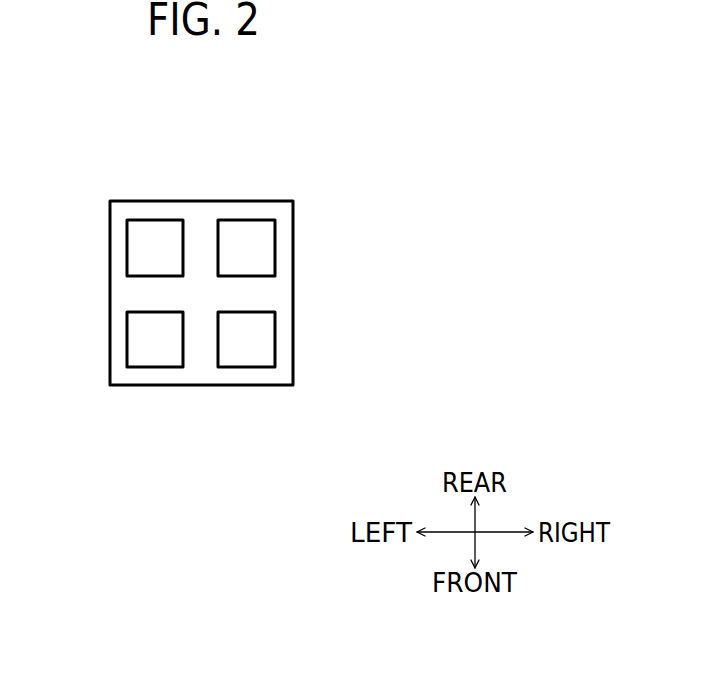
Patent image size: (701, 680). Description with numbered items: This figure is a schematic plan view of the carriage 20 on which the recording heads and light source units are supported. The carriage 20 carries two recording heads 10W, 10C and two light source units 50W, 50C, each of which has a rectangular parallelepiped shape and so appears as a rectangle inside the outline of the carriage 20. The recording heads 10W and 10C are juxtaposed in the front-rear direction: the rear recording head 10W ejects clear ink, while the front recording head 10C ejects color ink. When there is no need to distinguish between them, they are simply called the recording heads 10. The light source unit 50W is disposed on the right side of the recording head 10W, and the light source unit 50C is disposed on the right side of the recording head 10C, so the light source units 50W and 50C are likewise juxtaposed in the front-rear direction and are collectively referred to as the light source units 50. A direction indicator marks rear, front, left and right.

The carriage 20 is at (257, 293).
The recording heads 10 is at (210, 278).
The rear recording head 10W is at (150, 238).
The front recording head 10C is at (153, 348).
The light source units 50 is at (283, 293).
The light source unit 50W is at (245, 238).
The light source unit 50C is at (243, 348).